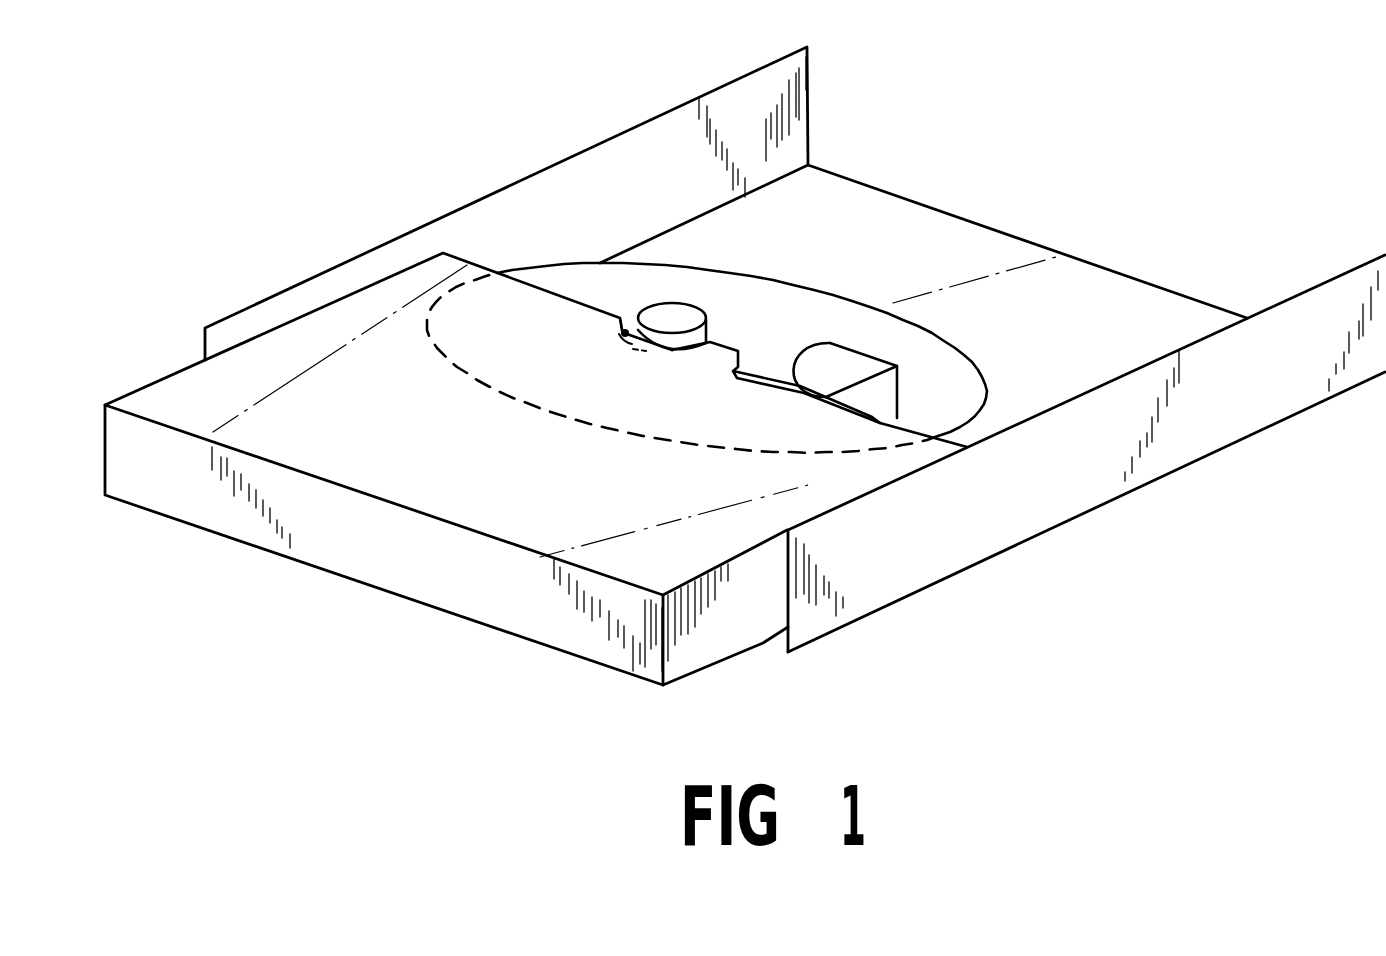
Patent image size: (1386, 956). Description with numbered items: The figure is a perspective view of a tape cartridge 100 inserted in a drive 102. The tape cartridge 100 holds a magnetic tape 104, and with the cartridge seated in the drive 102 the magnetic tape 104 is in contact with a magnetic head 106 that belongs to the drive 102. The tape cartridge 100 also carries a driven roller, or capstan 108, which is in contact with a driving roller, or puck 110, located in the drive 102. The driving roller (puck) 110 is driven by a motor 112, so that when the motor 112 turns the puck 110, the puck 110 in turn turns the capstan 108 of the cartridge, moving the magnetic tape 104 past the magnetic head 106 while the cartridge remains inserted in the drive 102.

The tape cartridge 100 is at (548, 650).
The drive 102 is at (933, 590).
The magnetic tape 104 is at (878, 419).
The magnetic head 106 is at (848, 343).
The driven roller (capstan) 108 is at (625, 331).
The driving roller (puck) 110 is at (688, 308).
The motor 112 is at (773, 281).